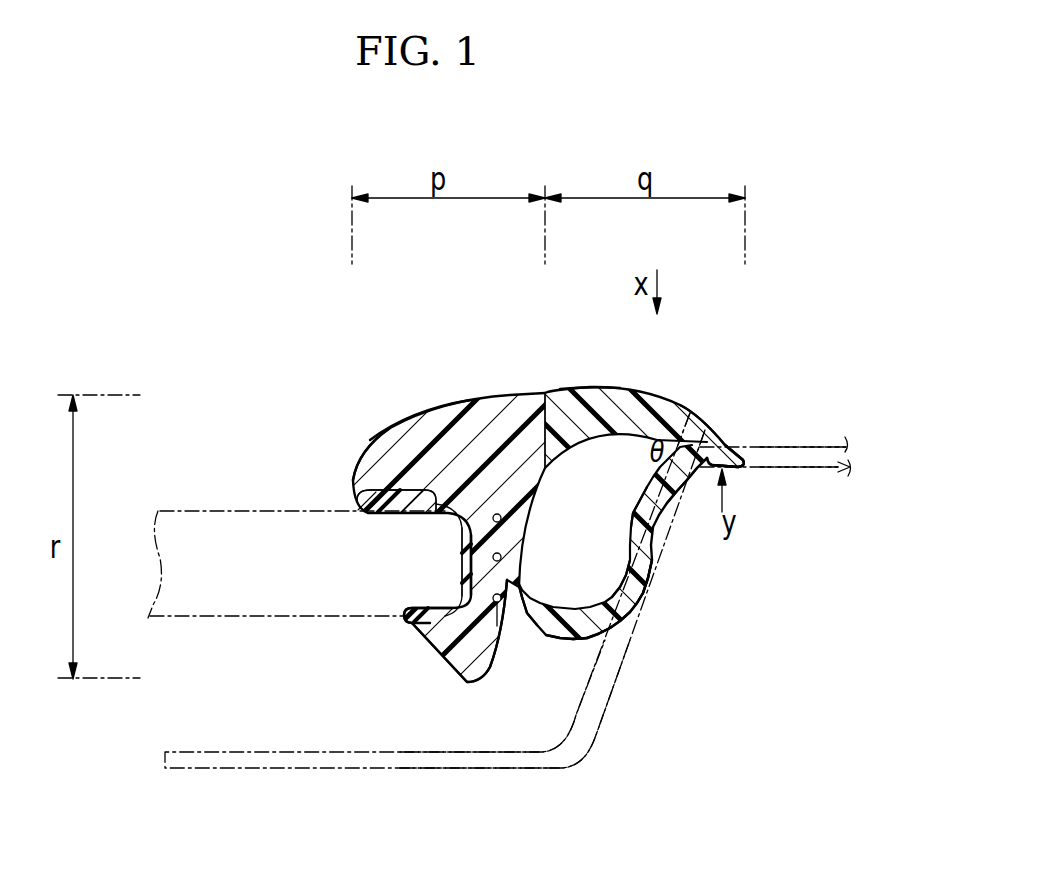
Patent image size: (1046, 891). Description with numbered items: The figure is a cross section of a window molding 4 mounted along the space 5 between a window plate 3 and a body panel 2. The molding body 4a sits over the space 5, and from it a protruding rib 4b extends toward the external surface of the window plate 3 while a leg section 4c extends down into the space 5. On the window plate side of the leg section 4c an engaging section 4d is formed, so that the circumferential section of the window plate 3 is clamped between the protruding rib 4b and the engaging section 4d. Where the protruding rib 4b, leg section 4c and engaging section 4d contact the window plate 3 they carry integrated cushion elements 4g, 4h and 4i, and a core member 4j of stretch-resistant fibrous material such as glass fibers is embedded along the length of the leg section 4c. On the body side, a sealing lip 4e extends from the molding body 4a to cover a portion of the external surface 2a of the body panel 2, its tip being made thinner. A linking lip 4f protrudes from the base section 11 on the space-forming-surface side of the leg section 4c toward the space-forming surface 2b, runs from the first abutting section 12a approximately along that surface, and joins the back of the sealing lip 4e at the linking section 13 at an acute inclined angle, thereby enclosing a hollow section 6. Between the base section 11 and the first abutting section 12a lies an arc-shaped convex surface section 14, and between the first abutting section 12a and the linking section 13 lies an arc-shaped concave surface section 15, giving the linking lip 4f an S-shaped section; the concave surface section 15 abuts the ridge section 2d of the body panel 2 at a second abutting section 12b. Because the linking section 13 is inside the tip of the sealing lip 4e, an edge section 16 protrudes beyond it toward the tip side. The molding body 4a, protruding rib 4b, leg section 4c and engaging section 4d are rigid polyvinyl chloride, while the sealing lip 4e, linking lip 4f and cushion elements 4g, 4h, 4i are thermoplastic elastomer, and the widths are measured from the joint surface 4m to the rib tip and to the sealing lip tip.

The body panel 2 is at (768, 447).
The external surface of the body panel 2a is at (812, 447).
The space-forming surface of the body panel 2b is at (598, 718).
The ridge section of the body panel 2d is at (668, 398).
The window plate 3 is at (205, 509).
The window molding 4 is at (532, 365).
The molding body 4a is at (402, 400).
The protruding rib 4b is at (370, 447).
The leg section 4c is at (515, 553).
The engaging section 4d is at (432, 653).
The sealing lip 4e is at (590, 388).
The linking lip 4f is at (608, 636).
The cushion element 4g is at (358, 494).
The cushion element 4h is at (462, 560).
The cushion element 4i is at (400, 613).
The core member 4j is at (497, 626).
The joint surface 4m is at (541, 402).
The space 5 is at (572, 678).
The hollow section 6 is at (645, 578).
The base section 11 is at (512, 620).
The first abutting section 12a is at (645, 598).
The second abutting section 12b is at (680, 505).
The linking section 13 is at (690, 426).
The convex surface section 14 is at (548, 642).
The concave surface section 15 is at (641, 511).
The edge section 16 is at (742, 470).